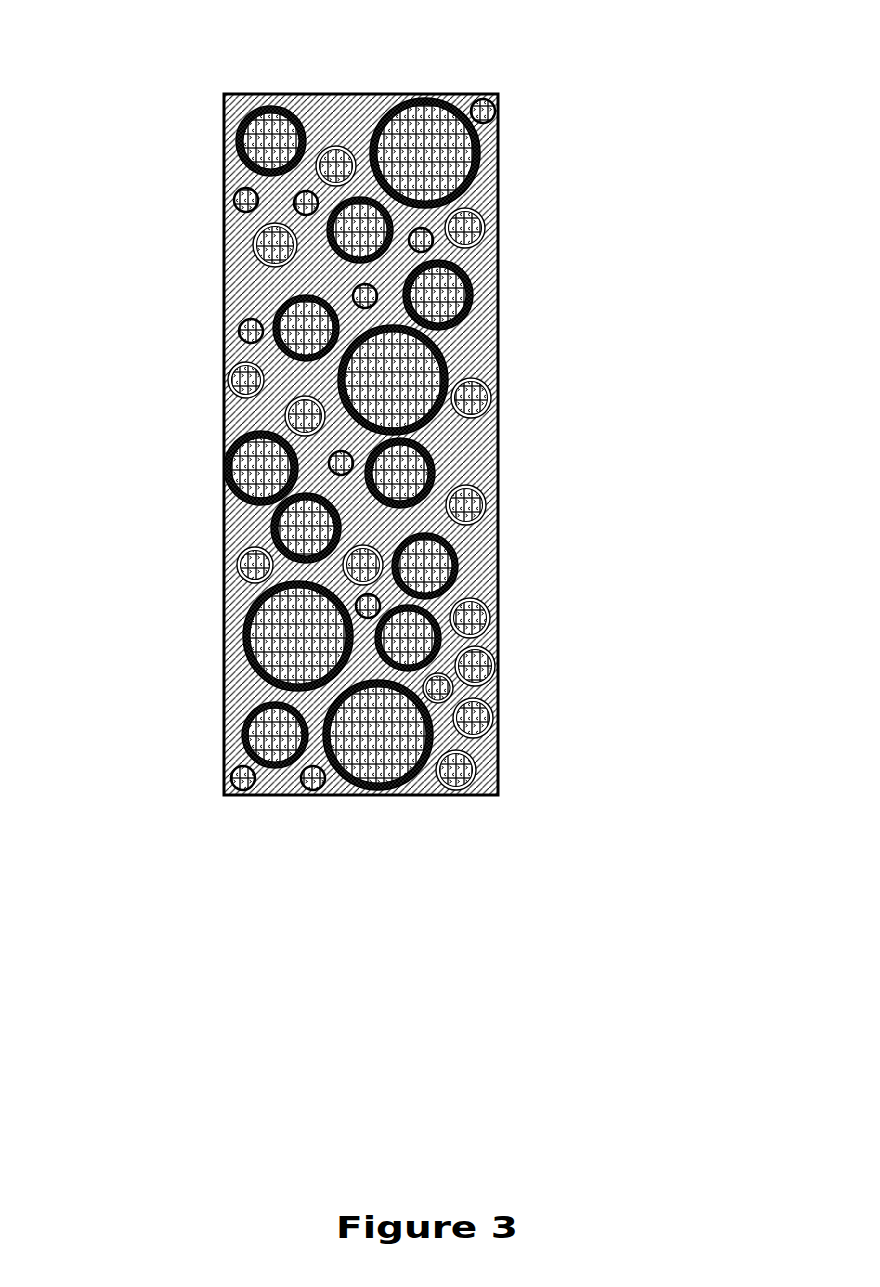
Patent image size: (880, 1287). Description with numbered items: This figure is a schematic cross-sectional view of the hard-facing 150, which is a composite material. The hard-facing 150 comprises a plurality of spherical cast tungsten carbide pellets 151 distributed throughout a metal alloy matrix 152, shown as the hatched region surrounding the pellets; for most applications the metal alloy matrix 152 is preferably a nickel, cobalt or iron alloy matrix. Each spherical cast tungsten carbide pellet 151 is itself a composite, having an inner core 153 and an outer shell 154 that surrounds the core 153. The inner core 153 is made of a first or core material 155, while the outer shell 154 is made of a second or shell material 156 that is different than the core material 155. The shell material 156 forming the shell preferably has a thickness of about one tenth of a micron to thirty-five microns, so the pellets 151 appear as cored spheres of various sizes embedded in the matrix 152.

The hard-facing 150 is at (133, 62).
The spherical cast tungsten carbide pellet 151 is at (467, 272).
The metal alloy matrix 152 is at (467, 336).
The inner core 153 is at (383, 370).
The core material 155 is at (418, 560).
The outer shell 154 is at (576, 733).
The shell material 156 is at (418, 723).